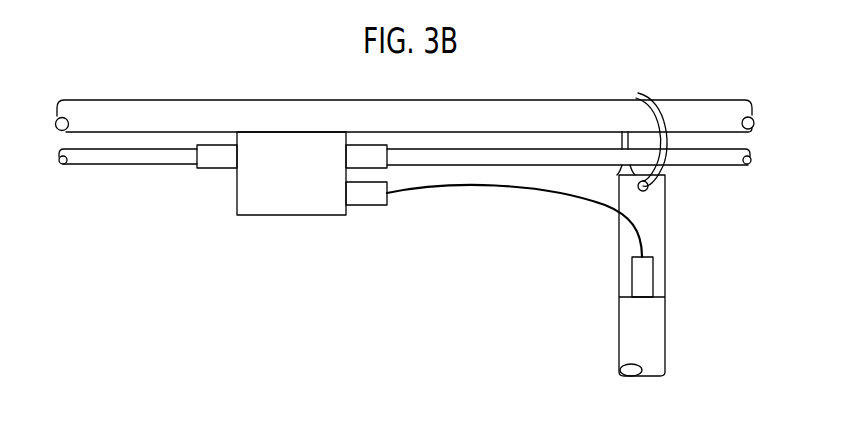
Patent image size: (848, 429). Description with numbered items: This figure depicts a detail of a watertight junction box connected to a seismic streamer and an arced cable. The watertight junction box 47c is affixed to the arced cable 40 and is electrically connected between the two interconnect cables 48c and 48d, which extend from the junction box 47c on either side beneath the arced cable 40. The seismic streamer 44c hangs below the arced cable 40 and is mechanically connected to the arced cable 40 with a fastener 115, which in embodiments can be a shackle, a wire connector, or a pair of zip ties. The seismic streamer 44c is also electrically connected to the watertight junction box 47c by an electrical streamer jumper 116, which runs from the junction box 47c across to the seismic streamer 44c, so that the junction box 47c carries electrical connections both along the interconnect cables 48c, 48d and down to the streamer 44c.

The arced cable 40 is at (193, 100).
The interconnect cable 48d is at (145, 167).
The watertight junction box 47c is at (275, 216).
The interconnect cable 48c is at (725, 166).
The electrical streamer jumper 116 is at (510, 188).
The seismic streamer 44c is at (665, 344).
The fastener 115 is at (647, 93).